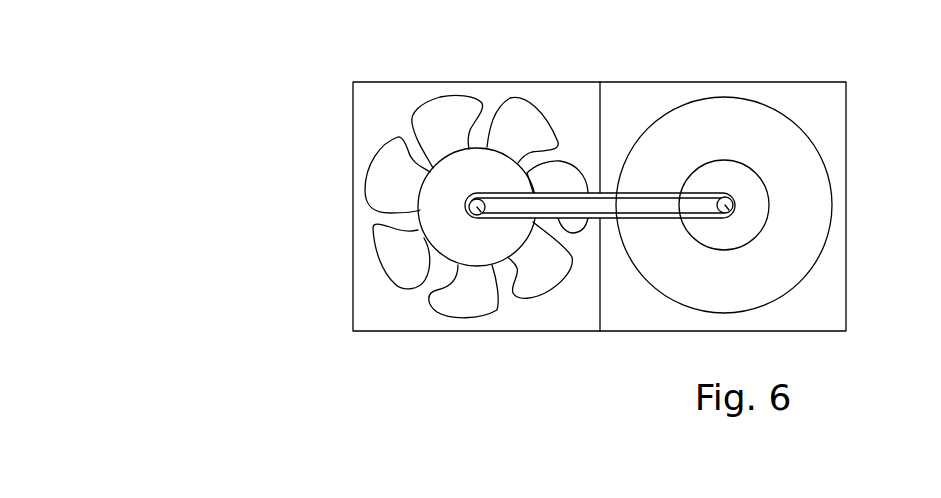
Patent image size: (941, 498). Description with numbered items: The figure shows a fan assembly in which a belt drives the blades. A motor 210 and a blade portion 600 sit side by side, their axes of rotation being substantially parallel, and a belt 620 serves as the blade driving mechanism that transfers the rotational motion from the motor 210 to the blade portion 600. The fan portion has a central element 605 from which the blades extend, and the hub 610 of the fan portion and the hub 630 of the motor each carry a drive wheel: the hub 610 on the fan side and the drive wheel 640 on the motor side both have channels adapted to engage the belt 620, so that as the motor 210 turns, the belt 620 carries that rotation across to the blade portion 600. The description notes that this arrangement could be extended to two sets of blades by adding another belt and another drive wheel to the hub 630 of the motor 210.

The motor 210 is at (703, 296).
The blade portion 600 is at (548, 275).
The fan hub 605 is at (446, 260).
The hub 610 is at (472, 208).
The belt 620 is at (606, 193).
The hub 630 is at (733, 160).
The drive wheel 640 is at (728, 210).